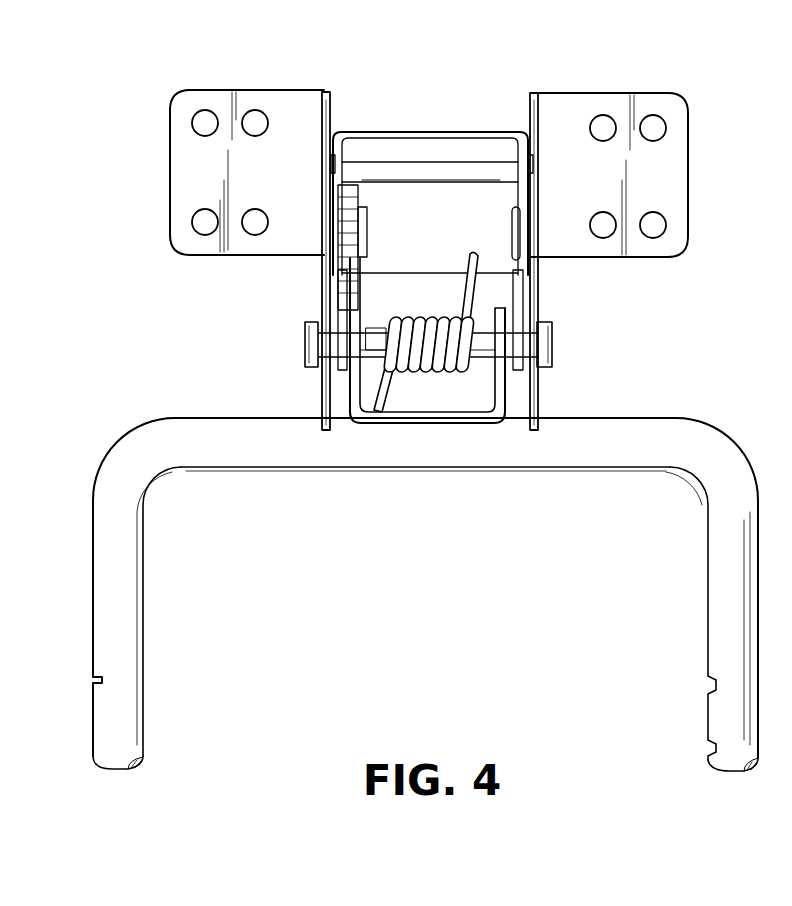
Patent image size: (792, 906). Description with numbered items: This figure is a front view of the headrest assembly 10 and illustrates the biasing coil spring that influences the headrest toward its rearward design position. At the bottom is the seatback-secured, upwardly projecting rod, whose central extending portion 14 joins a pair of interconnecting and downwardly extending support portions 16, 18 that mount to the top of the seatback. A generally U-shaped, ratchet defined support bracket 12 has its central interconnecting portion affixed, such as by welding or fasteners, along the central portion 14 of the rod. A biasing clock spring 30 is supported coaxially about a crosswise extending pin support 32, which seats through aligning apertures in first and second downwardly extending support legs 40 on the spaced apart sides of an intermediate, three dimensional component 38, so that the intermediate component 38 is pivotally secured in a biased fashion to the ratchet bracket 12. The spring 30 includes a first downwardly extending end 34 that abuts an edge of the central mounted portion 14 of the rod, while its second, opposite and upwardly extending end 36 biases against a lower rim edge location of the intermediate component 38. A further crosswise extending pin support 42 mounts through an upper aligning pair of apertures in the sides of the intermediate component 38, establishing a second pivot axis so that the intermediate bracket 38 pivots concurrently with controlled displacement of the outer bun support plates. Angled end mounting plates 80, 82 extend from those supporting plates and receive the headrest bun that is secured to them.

The latch assembly 10 is at (382, 74).
The ratchet defined support bracket 12 is at (444, 404).
The central extending portion 14 is at (405, 462).
The support portion 16 is at (92, 623).
The support portion 18 is at (708, 622).
The biasing clock spring 30 is at (413, 327).
The crosswise extending pin support 32 is at (375, 340).
The first downwardly extending end 34 is at (393, 410).
The second upwardly extending end 36 is at (468, 293).
The intermediate component 38 is at (438, 134).
The support legs 40 is at (340, 385).
The crosswise extending pin support 42 is at (410, 183).
The angled end mounting plate 80 is at (185, 178).
The angled end mounting plate 82 is at (568, 118).